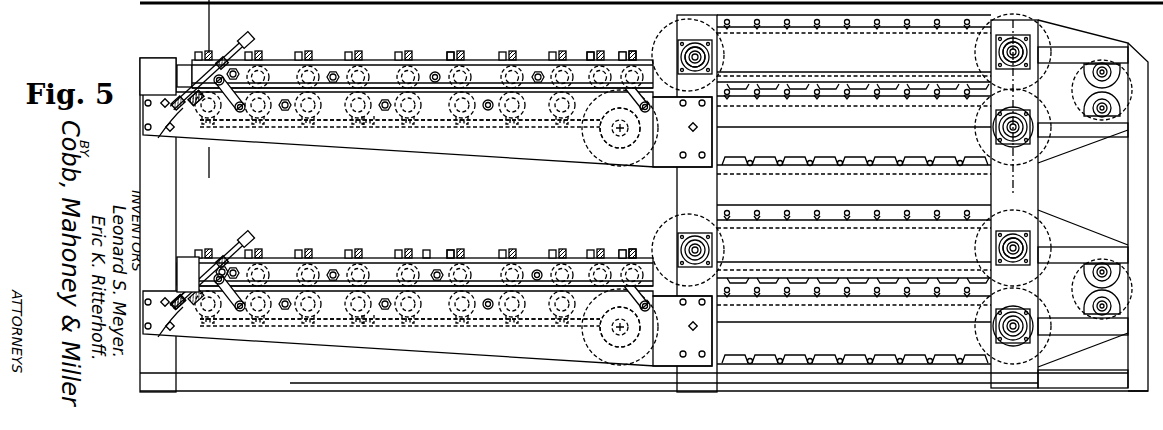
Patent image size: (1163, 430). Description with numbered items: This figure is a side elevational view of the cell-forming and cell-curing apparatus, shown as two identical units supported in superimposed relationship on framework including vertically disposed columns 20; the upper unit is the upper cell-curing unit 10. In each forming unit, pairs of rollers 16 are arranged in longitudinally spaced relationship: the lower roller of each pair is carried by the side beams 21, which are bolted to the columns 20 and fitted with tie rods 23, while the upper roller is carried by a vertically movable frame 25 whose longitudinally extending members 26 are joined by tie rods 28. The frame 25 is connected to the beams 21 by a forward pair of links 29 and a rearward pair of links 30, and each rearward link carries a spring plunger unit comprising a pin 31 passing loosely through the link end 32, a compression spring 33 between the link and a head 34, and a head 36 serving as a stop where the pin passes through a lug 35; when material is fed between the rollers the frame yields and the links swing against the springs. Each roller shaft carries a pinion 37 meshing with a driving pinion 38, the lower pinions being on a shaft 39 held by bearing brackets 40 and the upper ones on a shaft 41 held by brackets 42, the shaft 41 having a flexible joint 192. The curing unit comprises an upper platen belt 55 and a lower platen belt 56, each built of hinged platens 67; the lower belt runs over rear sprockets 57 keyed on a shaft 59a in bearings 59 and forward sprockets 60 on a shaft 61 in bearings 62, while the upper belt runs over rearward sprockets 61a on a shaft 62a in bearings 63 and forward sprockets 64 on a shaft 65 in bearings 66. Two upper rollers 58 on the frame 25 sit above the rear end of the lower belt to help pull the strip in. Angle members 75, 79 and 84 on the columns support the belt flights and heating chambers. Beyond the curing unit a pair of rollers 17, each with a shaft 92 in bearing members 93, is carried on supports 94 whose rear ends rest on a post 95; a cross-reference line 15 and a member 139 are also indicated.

The upper cell-curing unit 10 is at (1024, 4).
The section line 15 is at (218, 8).
The rollers 16 is at (467, 147).
The rollers 17 is at (1084, 96).
The columns 20 is at (176, 190).
The side beams 21 is at (432, 152).
The tie rods 23 is at (488, 110).
The vertically movable frame 25 is at (422, 145).
The longitudinally extending members 26 is at (382, 264).
The tie rods 28 is at (437, 70).
The forward links 29 is at (662, 314).
The rearward links 30 is at (228, 110).
The pin 31 is at (178, 278).
The end of link 32 is at (198, 262).
The compression spring 33 is at (222, 252).
The head 34 is at (246, 242).
The lug 35 is at (170, 290).
The head 36 is at (167, 178).
The pinion 37 is at (512, 57).
The driving pinion 38 is at (522, 72).
The shaft 39 is at (550, 125).
The bearing brackets 40 is at (368, 129).
The shaft 41 is at (588, 56).
The brackets 42 is at (560, 52).
The upper platen belt 55 is at (828, 22).
The lower platen belt 56 is at (808, 160).
The sprockets 57 is at (643, 164).
The upper rollers 58 is at (636, 56).
The bearings 59 is at (655, 135).
The transverse shaft 59a is at (655, 118).
The sprockets 60 is at (985, 136).
The transverse shaft 61 is at (990, 115).
The rearward sprockets 61a is at (658, 40).
The bearings 62 is at (714, 248).
The transverse shaft 62a is at (712, 56).
The bearings 63 is at (717, 60).
The forward sprockets 64 is at (996, 50).
The transverse shaft 65 is at (997, 55).
The bearings 66 is at (1084, 76).
The platens 67 is at (888, 160).
The angle members 75 is at (905, 33).
The angle members 79 is at (848, 72).
The angle members 84 is at (805, 106).
The shaft 92 is at (1104, 115).
The bearing members 93 is at (1100, 110).
The supports 94 is at (1075, 50).
The post 95 is at (1130, 194).
The frame member 139 is at (1107, 6).
The flexible joint 192 is at (1098, 307).